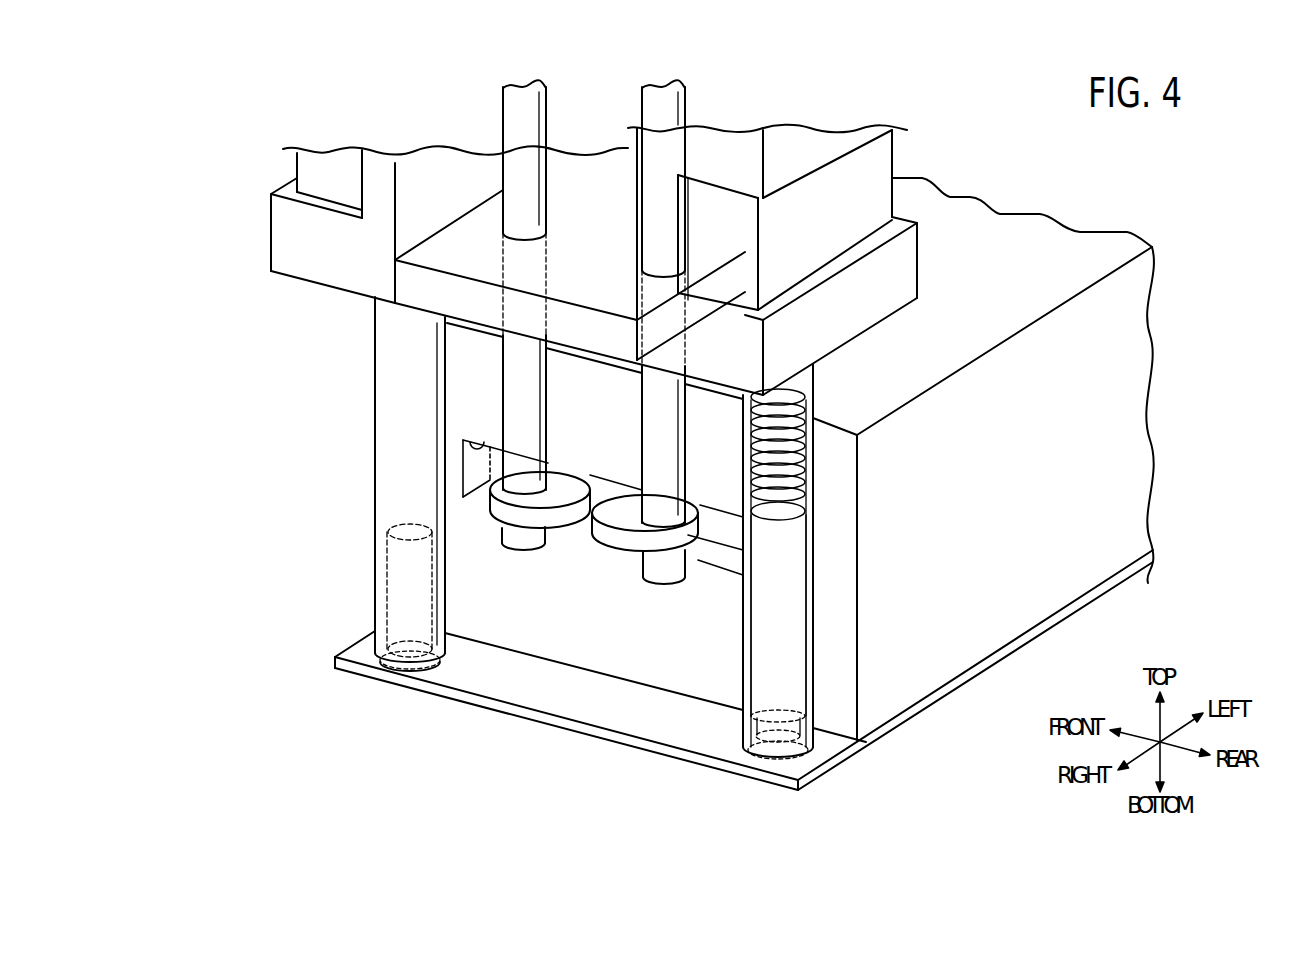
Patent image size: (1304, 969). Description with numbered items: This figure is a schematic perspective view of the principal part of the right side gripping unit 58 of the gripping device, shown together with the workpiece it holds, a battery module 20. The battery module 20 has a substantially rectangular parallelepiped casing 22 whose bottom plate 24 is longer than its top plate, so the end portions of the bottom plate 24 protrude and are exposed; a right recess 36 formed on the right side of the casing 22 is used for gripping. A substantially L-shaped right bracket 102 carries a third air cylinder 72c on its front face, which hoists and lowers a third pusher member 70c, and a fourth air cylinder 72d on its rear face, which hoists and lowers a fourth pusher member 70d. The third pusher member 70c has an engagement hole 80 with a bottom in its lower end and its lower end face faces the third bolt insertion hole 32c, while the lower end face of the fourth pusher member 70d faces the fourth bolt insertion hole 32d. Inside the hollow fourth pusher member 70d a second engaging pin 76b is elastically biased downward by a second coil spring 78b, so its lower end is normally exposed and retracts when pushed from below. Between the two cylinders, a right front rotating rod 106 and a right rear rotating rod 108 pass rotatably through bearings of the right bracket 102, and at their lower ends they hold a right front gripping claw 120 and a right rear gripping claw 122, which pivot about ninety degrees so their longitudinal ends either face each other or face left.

The battery module 20 is at (618, 742).
The casing 22 is at (1047, 563).
The bottom plate 24 is at (541, 688).
The third bolt insertion hole 32c is at (437, 668).
The fourth bolt insertion hole 32d is at (810, 757).
The right recess 36 is at (475, 443).
The right side gripping unit 58 is at (957, 210).
The third pusher member 70c is at (388, 445).
The fourth pusher member 70d is at (813, 592).
The third air cylinder 72c is at (260, 227).
The fourth air cylinder 72d is at (931, 267).
The second engaging pin 76b is at (797, 657).
The second coil spring 78b is at (802, 478).
The engagement hole 80 is at (392, 568).
The right bracket 102 is at (424, 297).
The right front rotating rod 106 is at (532, 415).
The right rear rotating rod 108 is at (668, 452).
The right front gripping claw 120 is at (555, 520).
The right rear gripping claw 122 is at (622, 537).